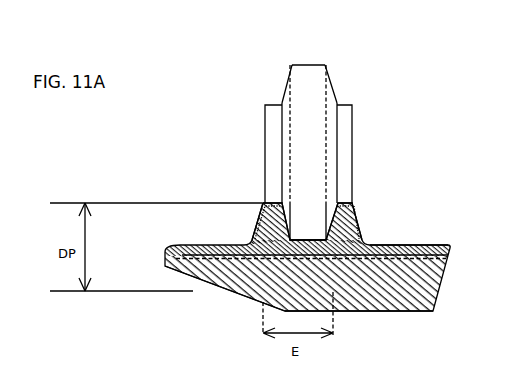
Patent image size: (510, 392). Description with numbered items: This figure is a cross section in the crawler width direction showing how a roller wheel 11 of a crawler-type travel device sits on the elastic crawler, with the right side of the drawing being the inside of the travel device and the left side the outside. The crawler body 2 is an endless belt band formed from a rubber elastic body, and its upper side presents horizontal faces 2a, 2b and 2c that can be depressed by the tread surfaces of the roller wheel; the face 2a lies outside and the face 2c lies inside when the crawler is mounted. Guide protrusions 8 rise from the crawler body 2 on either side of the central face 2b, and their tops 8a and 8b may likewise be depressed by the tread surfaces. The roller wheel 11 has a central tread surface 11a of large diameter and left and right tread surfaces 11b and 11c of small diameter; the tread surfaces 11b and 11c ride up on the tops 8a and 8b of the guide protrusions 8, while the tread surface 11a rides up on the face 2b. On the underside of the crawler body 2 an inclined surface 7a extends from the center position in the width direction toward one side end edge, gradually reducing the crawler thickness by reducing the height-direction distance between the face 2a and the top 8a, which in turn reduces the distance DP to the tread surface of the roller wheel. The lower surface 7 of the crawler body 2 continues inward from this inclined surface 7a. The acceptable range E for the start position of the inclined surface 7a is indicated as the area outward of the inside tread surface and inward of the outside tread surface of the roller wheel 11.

The crawler body 2 is at (185, 247).
The face 2a is at (232, 247).
The face 2b is at (310, 240).
The face 2c is at (400, 244).
The inclined surface portion 7 is at (380, 311).
The inclined surface 7a is at (232, 297).
The guide protrusion 8 is at (335, 203).
The top of guide protrusion 8a is at (262, 202).
The top of guide protrusion 8b is at (345, 203).
The roller wheel 11 is at (324, 131).
The central tread surface 11a is at (303, 74).
The left tread surface 11b is at (273, 135).
The right tread surface 11c is at (343, 121).